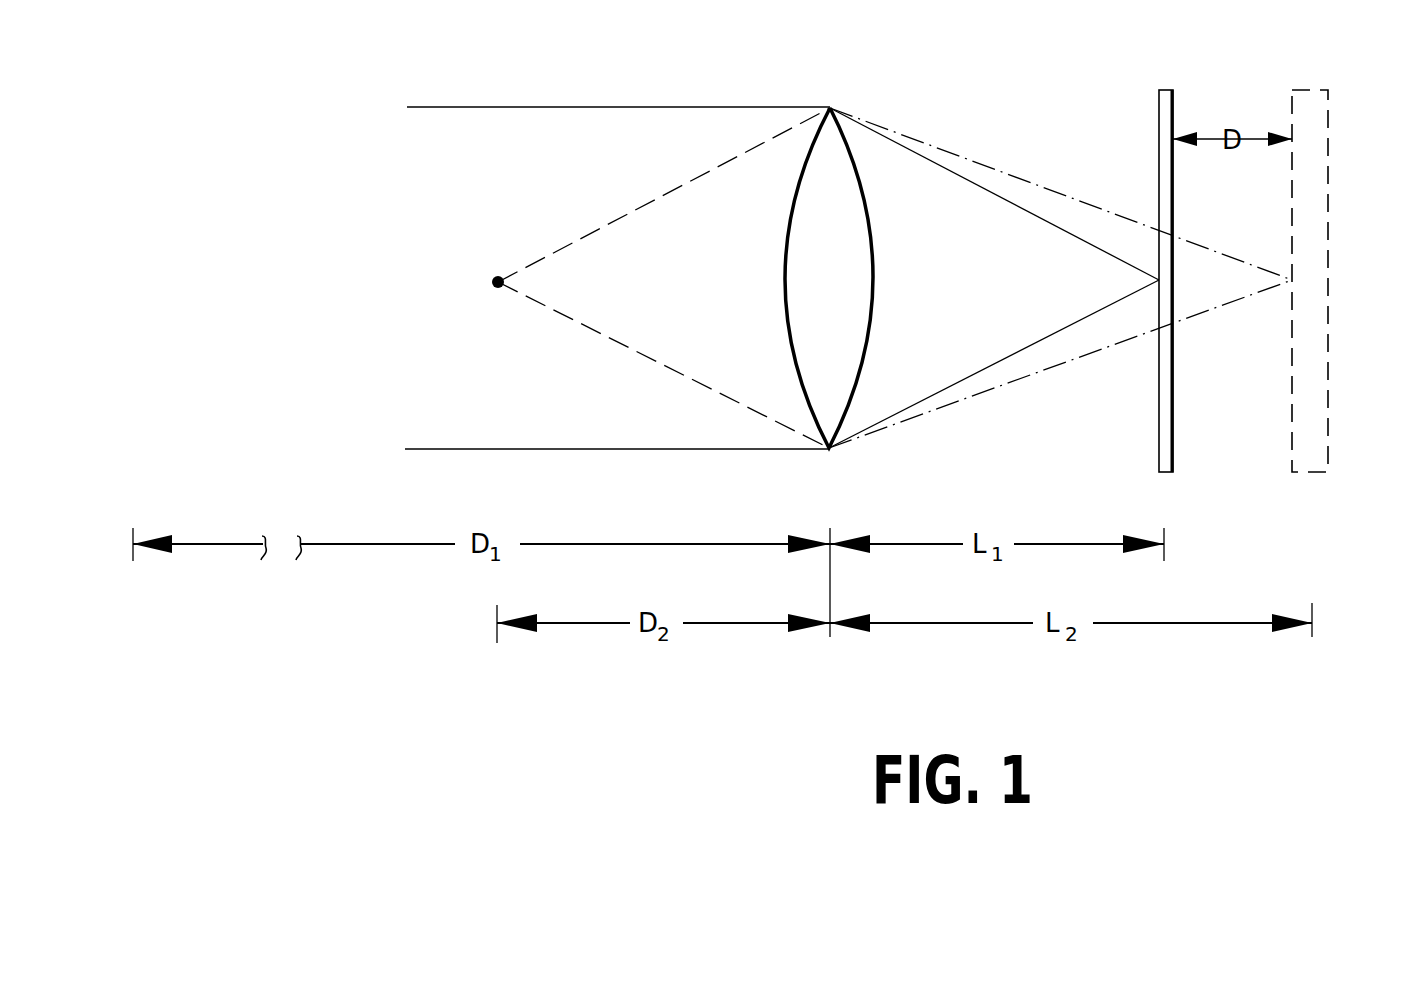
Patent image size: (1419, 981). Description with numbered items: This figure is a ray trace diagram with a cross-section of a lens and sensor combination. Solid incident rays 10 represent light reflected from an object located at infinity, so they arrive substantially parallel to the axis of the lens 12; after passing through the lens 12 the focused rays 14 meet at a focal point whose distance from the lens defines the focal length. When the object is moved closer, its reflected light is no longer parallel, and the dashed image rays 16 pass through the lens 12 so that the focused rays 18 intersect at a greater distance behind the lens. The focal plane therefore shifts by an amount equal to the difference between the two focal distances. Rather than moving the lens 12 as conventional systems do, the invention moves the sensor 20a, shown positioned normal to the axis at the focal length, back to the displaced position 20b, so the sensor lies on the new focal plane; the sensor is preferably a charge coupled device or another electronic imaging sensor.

The incident rays 10 is at (638, 106).
The lens 12 is at (834, 152).
The focused rays 14 is at (968, 182).
The image rays 16 is at (620, 346).
The focused rays 18 is at (1105, 350).
The sensor 20a is at (1167, 449).
The sensor at displaced position 20b is at (1320, 416).